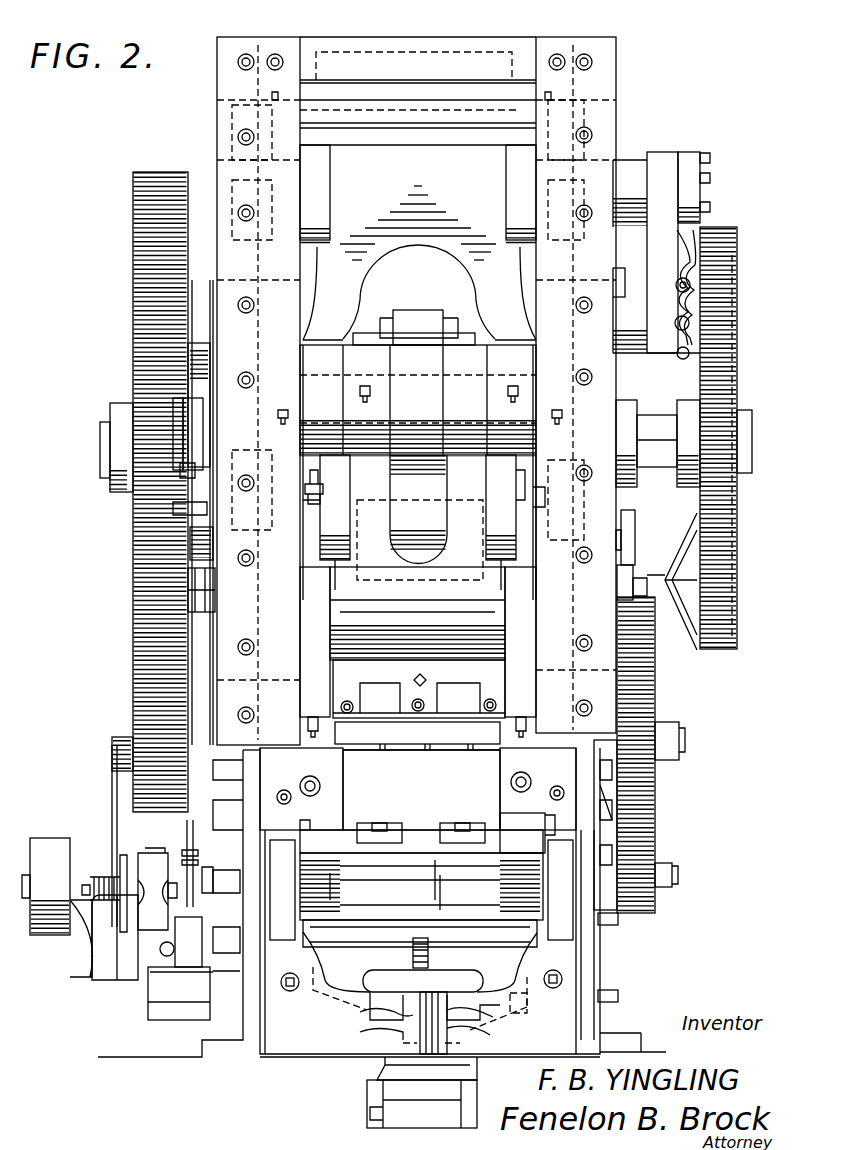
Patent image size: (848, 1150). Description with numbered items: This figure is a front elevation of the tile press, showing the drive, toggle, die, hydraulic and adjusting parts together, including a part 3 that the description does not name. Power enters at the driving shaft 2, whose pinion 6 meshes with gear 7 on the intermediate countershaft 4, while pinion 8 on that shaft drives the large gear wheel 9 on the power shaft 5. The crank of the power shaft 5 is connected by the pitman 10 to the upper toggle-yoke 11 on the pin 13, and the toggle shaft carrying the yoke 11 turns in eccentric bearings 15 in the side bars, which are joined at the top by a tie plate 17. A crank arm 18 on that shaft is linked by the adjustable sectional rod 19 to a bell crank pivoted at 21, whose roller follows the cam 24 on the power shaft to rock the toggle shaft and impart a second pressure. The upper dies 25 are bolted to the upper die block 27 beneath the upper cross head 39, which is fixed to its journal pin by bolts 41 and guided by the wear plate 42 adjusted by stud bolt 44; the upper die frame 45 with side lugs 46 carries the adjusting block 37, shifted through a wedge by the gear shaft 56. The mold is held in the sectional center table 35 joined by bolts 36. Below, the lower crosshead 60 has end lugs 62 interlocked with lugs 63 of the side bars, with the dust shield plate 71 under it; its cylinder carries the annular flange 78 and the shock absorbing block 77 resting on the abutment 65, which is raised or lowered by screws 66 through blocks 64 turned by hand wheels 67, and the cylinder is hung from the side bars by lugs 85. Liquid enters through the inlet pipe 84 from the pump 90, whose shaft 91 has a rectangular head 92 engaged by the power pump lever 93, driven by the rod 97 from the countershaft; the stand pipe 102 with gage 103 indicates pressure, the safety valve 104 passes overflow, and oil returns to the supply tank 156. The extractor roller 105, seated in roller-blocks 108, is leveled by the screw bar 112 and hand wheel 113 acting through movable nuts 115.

The driving shaft 2 is at (676, 875).
The base plate 3 is at (112, 980).
The intermediate countershaft 4 is at (682, 750).
The power shaft 5 is at (658, 460).
The pinion 6 is at (660, 914).
The gear 7 is at (658, 812).
The pinion 8 is at (145, 740).
The large gear wheel 9 is at (133, 344).
The pitman 10 is at (414, 339).
The upper toggle-yoke 11 is at (350, 273).
The pin 13 is at (323, 374).
The eccentric bearings 15 is at (235, 160).
The tie plate 17 is at (398, 116).
The crank arm 18 is at (653, 259).
The adjustable sectional rod 19 is at (690, 289).
The bell crank pivot 21 is at (638, 352).
The cam 24 is at (740, 438).
The upper dies 25 is at (472, 750).
The upper die block 27 is at (417, 734).
The open center table 35 is at (421, 790).
The bolts 36 is at (525, 779).
The adjusting block 37 is at (419, 689).
The upper cross head 39 is at (500, 636).
The bolts 41 is at (308, 718).
The wear plate 42 is at (538, 526).
The stud bolt 44 is at (310, 470).
The upper die frame 45 is at (442, 685).
The side lugs 46 is at (497, 698).
The gear shaft 56 is at (401, 673).
The lower crosshead 60 is at (493, 843).
The end lugs 62 is at (330, 836).
The lugs 63 is at (301, 789).
The blocks 64 is at (453, 1017).
The stationary stop or abutment 65 is at (402, 1090).
The screws 66 is at (440, 955).
The hand wheels 67 is at (380, 980).
The circular plate 71 is at (410, 860).
The shock absorbing block 77 is at (390, 1062).
The annular flange 78 is at (418, 870).
The inlet pipe 84 is at (177, 973).
The lugs 85 is at (303, 932).
The pump 90 is at (152, 863).
The pump shaft 91 is at (75, 877).
The rectangular head 92 is at (127, 892).
The power pump lever 93 is at (138, 900).
The rod 97 is at (112, 783).
The stand pipe 102 is at (183, 660).
The gage 103 is at (177, 411).
The safety valve 104 is at (86, 952).
The extractor roller 105 is at (370, 568).
The roller-blocks 108 is at (510, 516).
The screw bar 112 is at (424, 472).
The hand wheel 113 is at (700, 536).
The movable nuts 115 is at (200, 583).
The oil supply tank 156 is at (180, 1010).